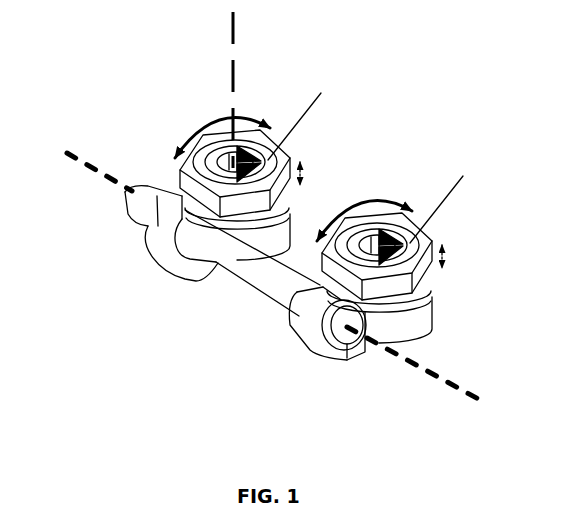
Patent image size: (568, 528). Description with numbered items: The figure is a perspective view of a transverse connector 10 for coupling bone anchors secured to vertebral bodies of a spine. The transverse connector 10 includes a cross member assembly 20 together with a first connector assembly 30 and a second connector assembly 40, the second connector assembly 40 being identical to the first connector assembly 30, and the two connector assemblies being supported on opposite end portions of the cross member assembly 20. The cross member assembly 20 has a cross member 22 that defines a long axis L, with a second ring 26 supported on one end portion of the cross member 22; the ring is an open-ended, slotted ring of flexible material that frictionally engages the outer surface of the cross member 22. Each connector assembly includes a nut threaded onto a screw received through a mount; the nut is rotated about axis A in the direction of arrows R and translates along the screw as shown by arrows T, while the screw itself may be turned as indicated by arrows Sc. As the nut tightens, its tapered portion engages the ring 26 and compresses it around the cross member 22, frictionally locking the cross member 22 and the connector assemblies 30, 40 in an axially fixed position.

The transverse connector 10 is at (421, 50).
The cross member assembly 20 is at (136, 230).
The cross member 22 is at (253, 275).
The second ring 26 is at (208, 220).
The first connector assembly 30 is at (296, 146).
The second connector assembly 40 is at (449, 296).